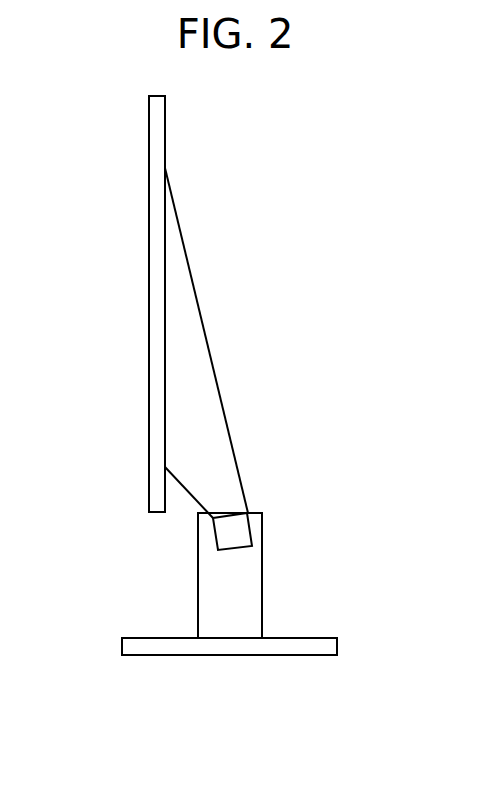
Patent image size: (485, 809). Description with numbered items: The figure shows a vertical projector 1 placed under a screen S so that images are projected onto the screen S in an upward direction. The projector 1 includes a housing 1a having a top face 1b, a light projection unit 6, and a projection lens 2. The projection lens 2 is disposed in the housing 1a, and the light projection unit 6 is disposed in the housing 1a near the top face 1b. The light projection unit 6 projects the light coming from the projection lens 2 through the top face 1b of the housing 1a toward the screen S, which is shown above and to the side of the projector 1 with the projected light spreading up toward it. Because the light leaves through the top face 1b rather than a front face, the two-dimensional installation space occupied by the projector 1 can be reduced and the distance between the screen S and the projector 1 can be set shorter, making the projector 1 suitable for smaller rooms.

The screen S is at (149, 289).
The projector 1 is at (240, 561).
The housing 1a is at (262, 595).
The top face 1b is at (257, 513).
The projection lens 2 is at (226, 549).
The light projection unit 6 is at (228, 510).